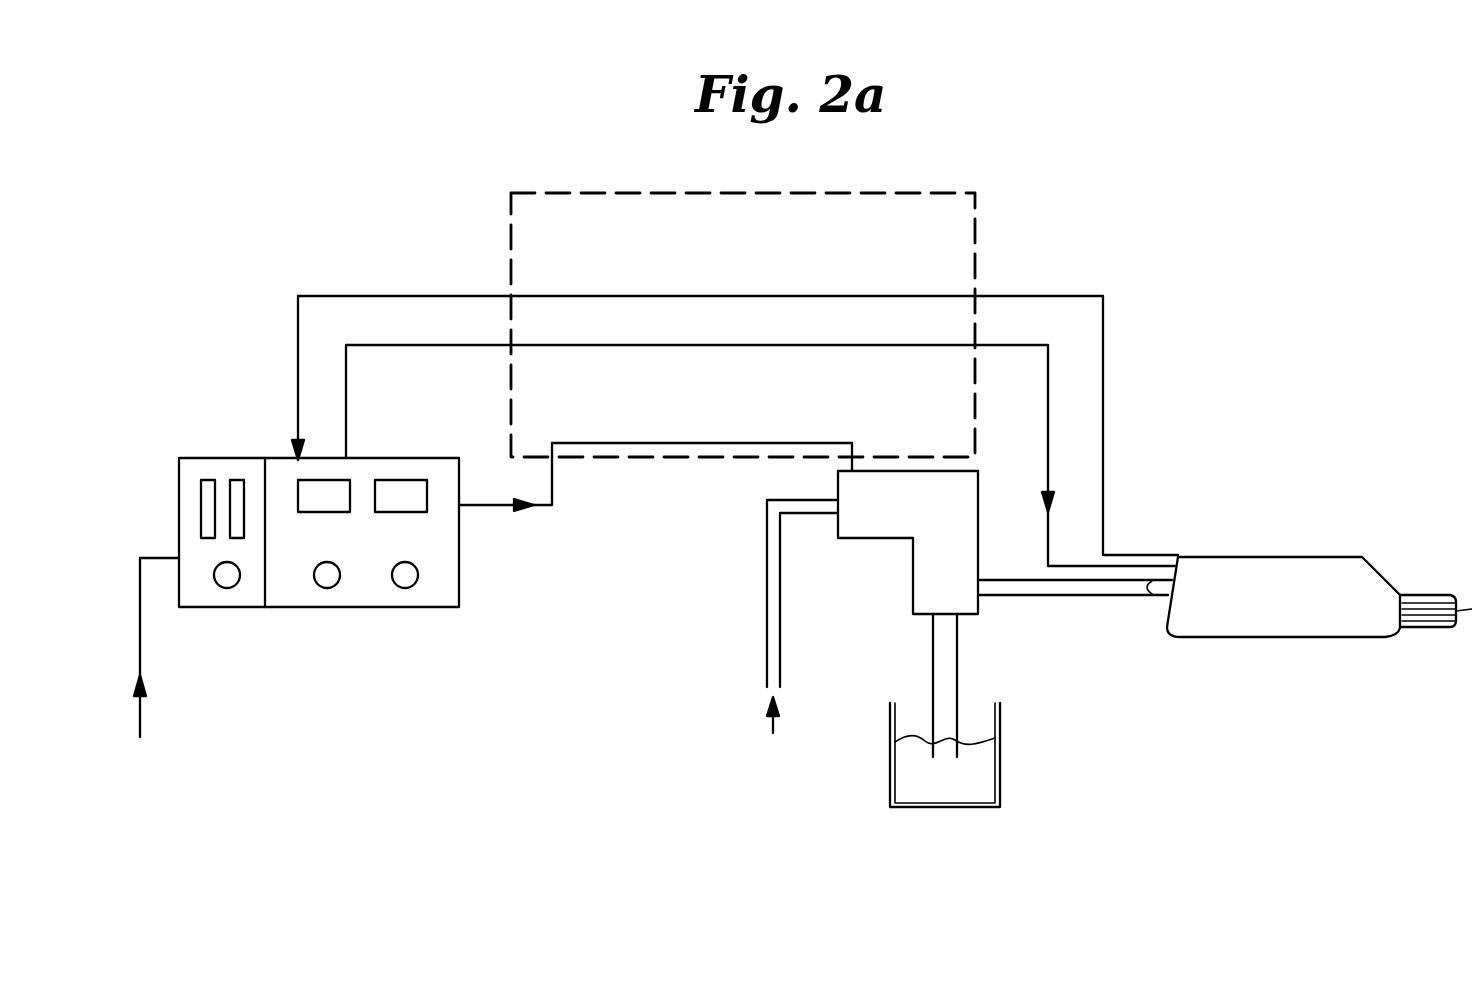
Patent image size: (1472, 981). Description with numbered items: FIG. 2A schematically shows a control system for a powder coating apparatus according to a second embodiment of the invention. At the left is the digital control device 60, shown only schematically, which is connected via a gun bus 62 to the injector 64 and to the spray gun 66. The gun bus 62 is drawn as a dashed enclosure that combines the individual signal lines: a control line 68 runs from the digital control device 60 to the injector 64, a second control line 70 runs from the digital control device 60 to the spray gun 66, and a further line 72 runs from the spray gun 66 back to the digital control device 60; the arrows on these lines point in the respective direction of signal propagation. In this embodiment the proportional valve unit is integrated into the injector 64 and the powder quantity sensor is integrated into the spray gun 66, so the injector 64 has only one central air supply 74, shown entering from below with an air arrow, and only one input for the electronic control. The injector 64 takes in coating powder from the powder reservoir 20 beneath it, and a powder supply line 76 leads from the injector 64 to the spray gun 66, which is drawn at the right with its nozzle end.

The powder reservoir 20 is at (1000, 752).
The digital control device 60 is at (380, 607).
The gun bus 62 is at (977, 243).
The injector 64 is at (913, 565).
The spray gun 66 is at (1278, 567).
The control line 68 is at (718, 443).
The control line 70 is at (850, 346).
The further line 72 is at (1103, 383).
The central air supply 74 is at (767, 619).
The powder supply line 76 is at (1068, 597).